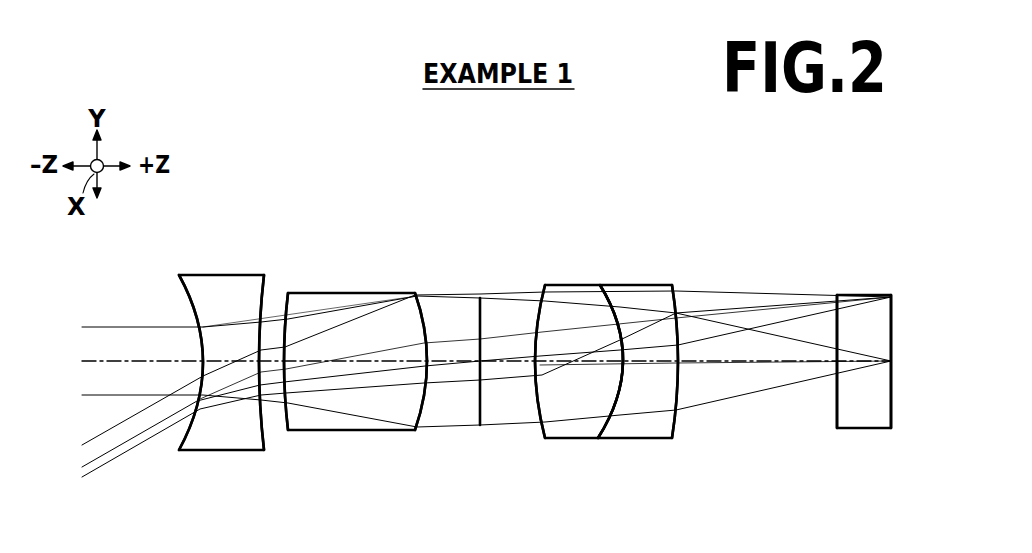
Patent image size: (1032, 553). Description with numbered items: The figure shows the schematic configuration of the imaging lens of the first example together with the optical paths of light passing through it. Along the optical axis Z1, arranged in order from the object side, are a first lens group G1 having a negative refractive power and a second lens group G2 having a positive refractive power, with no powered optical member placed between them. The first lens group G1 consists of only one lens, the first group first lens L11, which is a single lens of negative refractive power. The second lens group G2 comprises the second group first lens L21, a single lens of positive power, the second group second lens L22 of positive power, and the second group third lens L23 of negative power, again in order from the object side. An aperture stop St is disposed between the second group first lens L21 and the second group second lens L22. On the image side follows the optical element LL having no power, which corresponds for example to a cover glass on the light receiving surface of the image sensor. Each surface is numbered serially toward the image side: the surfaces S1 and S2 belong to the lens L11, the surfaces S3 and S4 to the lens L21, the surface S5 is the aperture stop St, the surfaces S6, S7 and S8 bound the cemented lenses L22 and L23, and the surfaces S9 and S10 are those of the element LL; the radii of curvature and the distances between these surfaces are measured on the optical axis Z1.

The optical axis Z1 is at (88, 360).
The first lens group G1 is at (233, 217).
The first group first lens L11 is at (234, 274).
The second lens group G2 is at (662, 208).
The second group first lens L21 is at (345, 293).
The aperture stop St is at (478, 298).
The second group second lens L22 is at (575, 300).
The second group third lens L23 is at (638, 300).
The optical element having no power LL is at (862, 308).
The first surface S1 is at (183, 433).
The second surface S2 is at (245, 385).
The third surface S3 is at (290, 395).
The fourth surface S4 is at (433, 387).
The fifth surface S5 is at (480, 425).
The sixth surface S6 is at (540, 408).
The seventh surface S7 is at (615, 405).
The eighth surface S8 is at (675, 425).
The ninth surface S9 is at (837, 413).
The tenth surface S10 is at (891, 413).